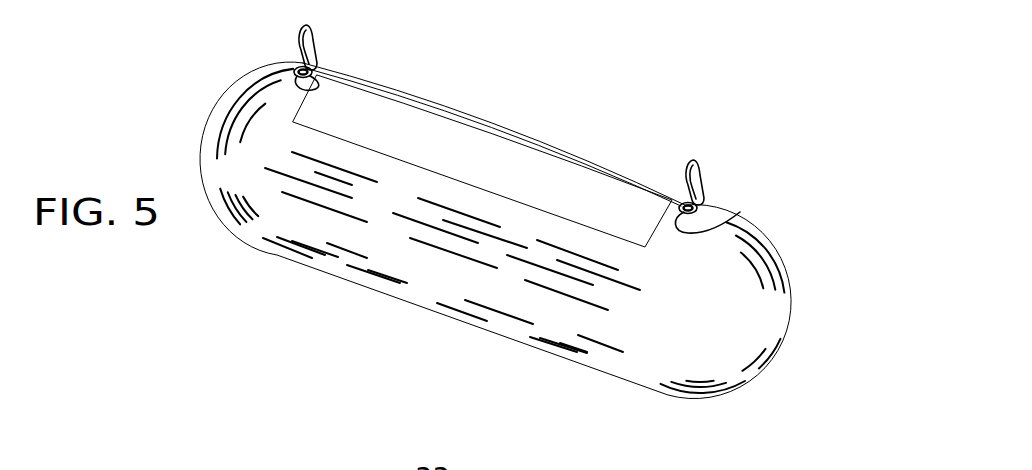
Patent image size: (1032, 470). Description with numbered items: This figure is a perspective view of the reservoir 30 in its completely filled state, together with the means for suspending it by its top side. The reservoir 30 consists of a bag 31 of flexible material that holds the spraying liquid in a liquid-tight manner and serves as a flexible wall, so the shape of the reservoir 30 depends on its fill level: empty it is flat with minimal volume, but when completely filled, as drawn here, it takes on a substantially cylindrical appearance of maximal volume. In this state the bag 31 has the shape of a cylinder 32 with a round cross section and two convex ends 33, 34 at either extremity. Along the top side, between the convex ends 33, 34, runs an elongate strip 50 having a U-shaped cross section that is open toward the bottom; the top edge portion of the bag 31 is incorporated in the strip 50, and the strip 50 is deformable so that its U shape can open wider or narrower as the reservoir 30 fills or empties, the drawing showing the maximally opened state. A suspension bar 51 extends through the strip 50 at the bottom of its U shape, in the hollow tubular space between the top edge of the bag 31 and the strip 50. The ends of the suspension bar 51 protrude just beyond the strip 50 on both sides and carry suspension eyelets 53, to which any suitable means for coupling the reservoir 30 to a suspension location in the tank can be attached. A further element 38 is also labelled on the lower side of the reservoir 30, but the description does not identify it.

The reservoir 30 is at (216, 258).
The bag 31 is at (355, 227).
The cylinder 32 is at (517, 284).
The convex end 33 is at (212, 142).
The convex end 34 is at (776, 330).
The lower fastening strip 38 is at (607, 299).
The elongate strip 50 is at (478, 132).
The suspension bar 51 is at (740, 211).
The suspension eyelets 53 is at (311, 29).